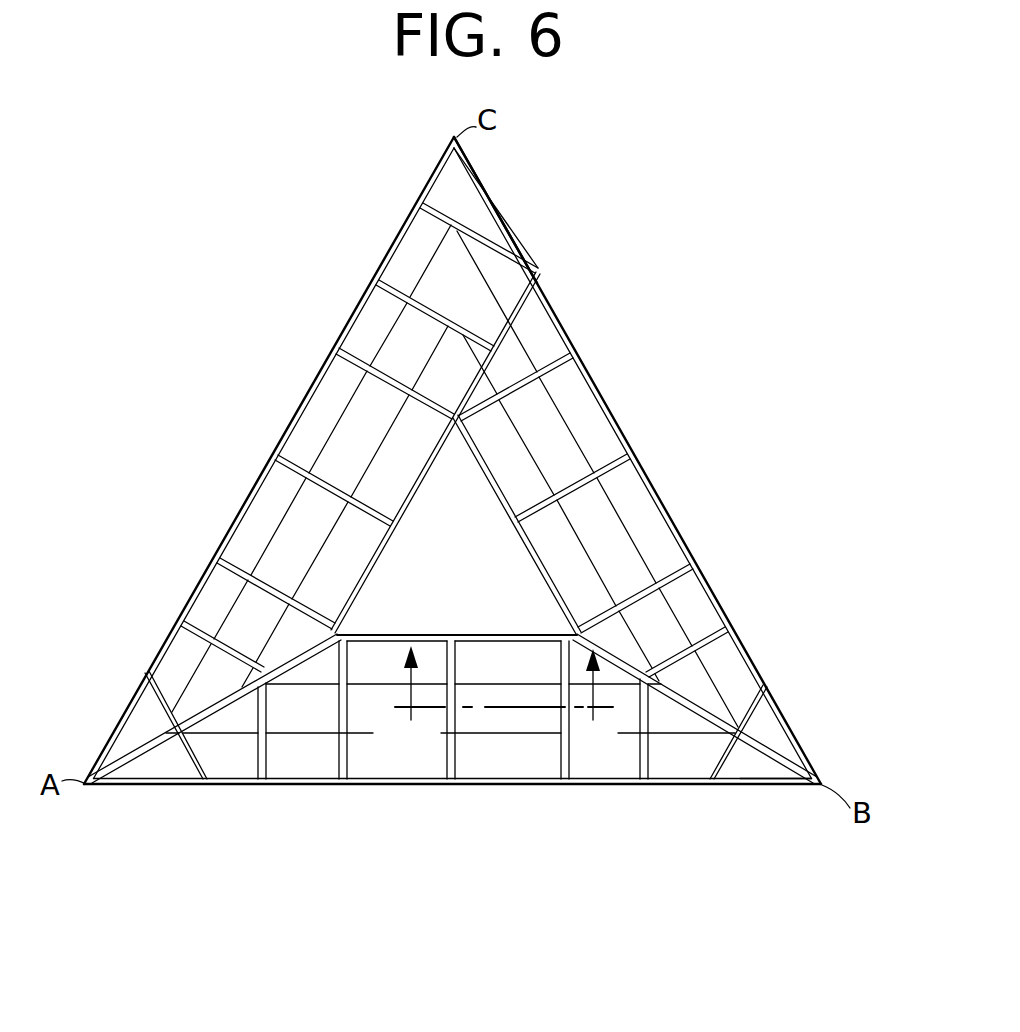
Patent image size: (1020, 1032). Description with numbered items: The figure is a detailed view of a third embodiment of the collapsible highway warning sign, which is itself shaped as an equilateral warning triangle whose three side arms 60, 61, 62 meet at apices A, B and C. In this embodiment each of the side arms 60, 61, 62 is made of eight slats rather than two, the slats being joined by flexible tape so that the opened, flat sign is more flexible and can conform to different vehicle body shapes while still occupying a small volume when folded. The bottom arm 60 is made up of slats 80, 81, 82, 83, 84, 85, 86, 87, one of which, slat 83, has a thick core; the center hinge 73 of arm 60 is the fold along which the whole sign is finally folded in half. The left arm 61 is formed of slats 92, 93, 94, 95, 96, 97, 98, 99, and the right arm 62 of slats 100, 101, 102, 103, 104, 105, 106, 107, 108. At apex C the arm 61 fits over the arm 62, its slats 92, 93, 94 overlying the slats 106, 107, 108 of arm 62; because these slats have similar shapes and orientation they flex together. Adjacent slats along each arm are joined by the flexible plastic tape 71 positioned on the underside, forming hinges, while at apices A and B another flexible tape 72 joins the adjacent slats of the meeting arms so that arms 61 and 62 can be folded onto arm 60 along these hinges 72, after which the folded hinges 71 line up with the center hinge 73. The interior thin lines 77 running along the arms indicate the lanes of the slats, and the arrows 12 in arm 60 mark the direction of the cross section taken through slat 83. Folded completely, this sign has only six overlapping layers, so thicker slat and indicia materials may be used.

The direction arrow 12 is at (502, 706).
The side arm 60 is at (328, 820).
The side arm 61 is at (230, 427).
The side arm 62 is at (682, 421).
The flexible plastic tape 71 is at (392, 528).
The flexible tape 72 is at (192, 705).
The center hinge 73 is at (455, 637).
The inner lane line 77 is at (408, 457).
The bottom corner cell 80 is at (740, 770).
The bottom cell 81 is at (670, 770).
The bottom cell 82 is at (612, 770).
The slat 83 is at (499, 765).
The bottom cell 84 is at (380, 765).
The bottom cell 85 is at (308, 762).
The bottom cell 86 is at (226, 762).
The bottom corner cell 87 is at (142, 780).
The slat 92 is at (440, 172).
The slat 93 is at (396, 240).
The slat 94 is at (358, 310).
The left strip cell 95 is at (312, 385).
The left strip cell 96 is at (250, 494).
The left strip cell 97 is at (193, 585).
The left strip cell 98 is at (160, 668).
The left strip corner cell 99 is at (126, 712).
The right strip corner cell 100 is at (795, 718).
The right strip cell 101 is at (748, 637).
The right strip cell 102 is at (723, 592).
The right strip cell 103 is at (688, 500).
The right strip cell 104 is at (625, 388).
The right strip cell 105 is at (560, 330).
The slat 106 is at (508, 216).
The slat 107 is at (562, 208).
The slat 108 is at (591, 282).